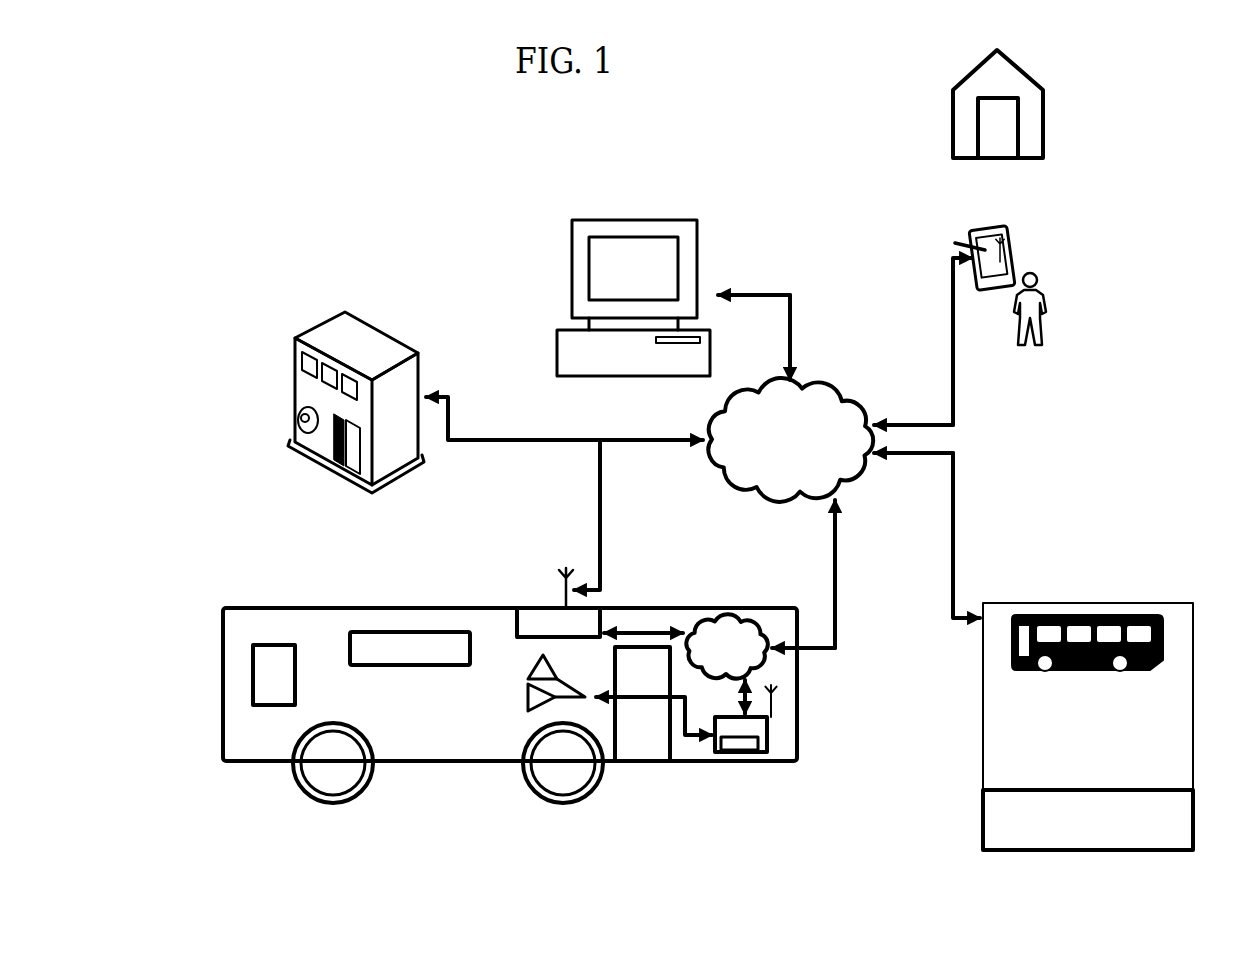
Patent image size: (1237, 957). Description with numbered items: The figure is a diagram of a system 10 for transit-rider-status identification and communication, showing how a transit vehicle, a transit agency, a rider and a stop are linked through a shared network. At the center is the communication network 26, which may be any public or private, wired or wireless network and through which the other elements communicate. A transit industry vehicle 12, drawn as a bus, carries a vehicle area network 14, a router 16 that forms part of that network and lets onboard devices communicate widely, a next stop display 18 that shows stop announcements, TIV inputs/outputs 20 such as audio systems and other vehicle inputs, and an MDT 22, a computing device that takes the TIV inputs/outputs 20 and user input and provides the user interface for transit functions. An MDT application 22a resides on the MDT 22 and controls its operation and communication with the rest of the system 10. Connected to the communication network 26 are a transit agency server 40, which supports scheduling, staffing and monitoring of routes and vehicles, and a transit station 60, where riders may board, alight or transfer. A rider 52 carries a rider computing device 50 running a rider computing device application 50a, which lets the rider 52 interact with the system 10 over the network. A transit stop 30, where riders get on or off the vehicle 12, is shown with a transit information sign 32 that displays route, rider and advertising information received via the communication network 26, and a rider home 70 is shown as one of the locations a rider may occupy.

The system 10 is at (565, 142).
The transit industry vehicle 12 is at (541, 678).
The vehicle area network 14 is at (728, 618).
The router 16 is at (533, 607).
The next stop display 18 is at (413, 666).
The TIV inputs/outputs 20 is at (522, 677).
The MDT 22 is at (787, 744).
The MDT application 22a is at (736, 753).
The communication network 26 is at (792, 384).
The transit stop 30 is at (1125, 603).
The transit information sign 32 is at (983, 812).
The transit agency server 40 is at (546, 297).
The rider computing device 50 is at (927, 235).
The rider computing device application 50a is at (957, 217).
The rider 52 is at (1057, 290).
The transit station 60 is at (314, 332).
The rider home 70 is at (1045, 93).